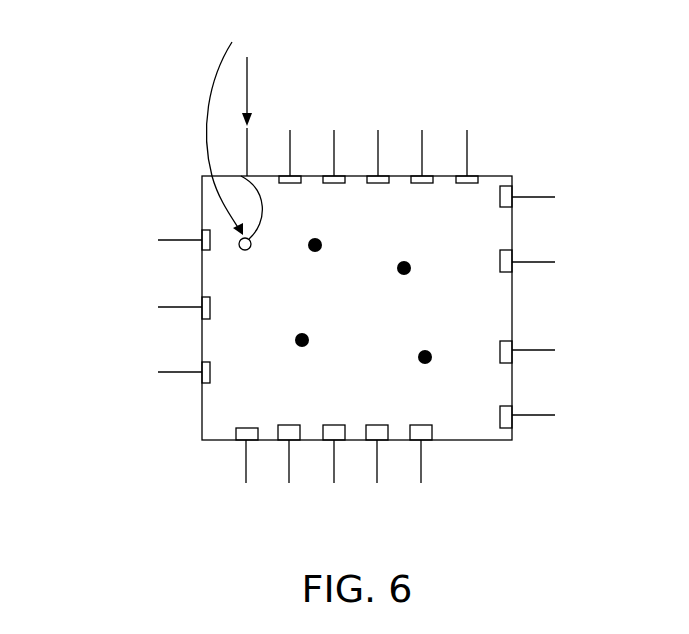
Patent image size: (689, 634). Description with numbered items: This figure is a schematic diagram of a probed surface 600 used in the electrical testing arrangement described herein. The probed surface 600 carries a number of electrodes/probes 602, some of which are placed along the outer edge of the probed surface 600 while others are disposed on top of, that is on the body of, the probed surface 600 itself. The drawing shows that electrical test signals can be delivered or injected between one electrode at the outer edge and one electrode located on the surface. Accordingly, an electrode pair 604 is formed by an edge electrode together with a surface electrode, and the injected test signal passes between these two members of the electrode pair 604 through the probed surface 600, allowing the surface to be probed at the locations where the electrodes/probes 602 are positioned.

The probed surface 600 is at (226, 410).
The electrodes/probes 602 is at (469, 177).
The electrode pair 604 is at (160, 113).